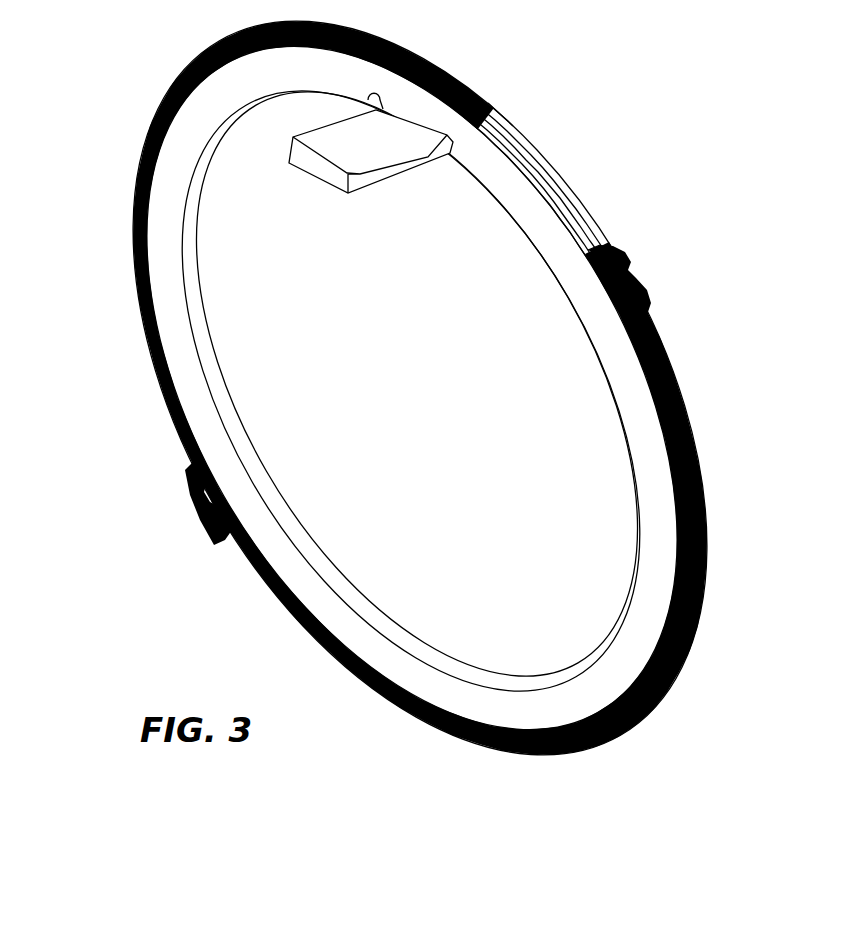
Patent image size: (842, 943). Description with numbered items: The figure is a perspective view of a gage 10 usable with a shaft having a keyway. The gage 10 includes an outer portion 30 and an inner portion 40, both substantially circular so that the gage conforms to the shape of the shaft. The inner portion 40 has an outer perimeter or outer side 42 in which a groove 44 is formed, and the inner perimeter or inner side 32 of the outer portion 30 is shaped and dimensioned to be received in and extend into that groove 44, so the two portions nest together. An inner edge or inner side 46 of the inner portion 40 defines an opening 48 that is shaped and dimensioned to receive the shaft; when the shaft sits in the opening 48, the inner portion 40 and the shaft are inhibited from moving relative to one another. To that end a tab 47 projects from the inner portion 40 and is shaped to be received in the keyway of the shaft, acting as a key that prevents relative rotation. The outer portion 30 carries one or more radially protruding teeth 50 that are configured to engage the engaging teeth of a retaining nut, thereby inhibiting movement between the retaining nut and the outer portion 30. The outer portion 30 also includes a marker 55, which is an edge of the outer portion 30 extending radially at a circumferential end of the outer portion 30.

The gage 10 is at (595, 774).
The outer portion 30 is at (670, 375).
The inner side 32 is at (485, 122).
The inner portion 40 is at (630, 392).
The outer side 42 is at (560, 213).
The groove 44 is at (530, 170).
The inner side 46 is at (533, 232).
The tab 47 is at (362, 174).
The opening 48 is at (318, 401).
The teeth 50 is at (630, 253).
The marker 55 is at (592, 248).